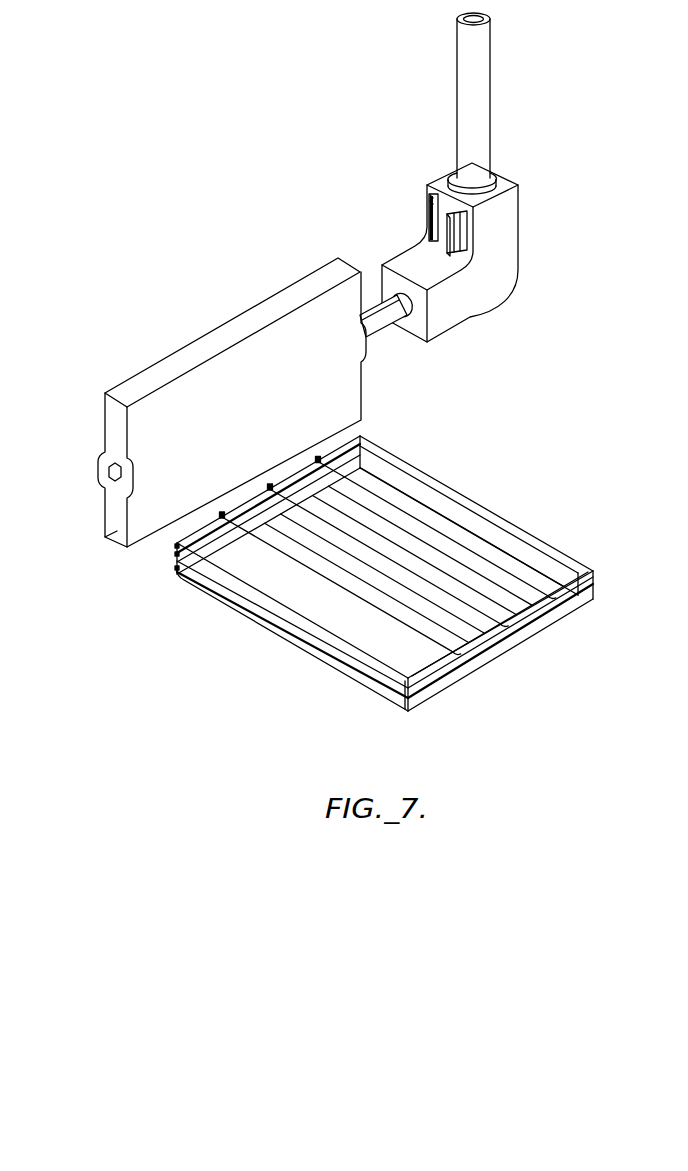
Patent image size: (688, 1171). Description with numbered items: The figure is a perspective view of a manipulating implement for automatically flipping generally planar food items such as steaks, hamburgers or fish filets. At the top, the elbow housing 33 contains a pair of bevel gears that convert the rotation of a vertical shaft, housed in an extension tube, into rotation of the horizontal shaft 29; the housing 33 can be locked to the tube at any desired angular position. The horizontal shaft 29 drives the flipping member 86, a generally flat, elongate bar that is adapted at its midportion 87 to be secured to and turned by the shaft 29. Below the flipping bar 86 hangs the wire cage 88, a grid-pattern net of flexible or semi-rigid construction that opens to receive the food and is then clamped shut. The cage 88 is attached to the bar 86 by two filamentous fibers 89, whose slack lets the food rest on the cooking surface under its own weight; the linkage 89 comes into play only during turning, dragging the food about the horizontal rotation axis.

The horizontal shaft 29 is at (386, 330).
The elbow housing 33 is at (518, 243).
The flipping member 86 is at (178, 350).
The midportion 87 is at (103, 481).
The wire cage 88 is at (570, 556).
The flexible fibers 89 is at (361, 423).